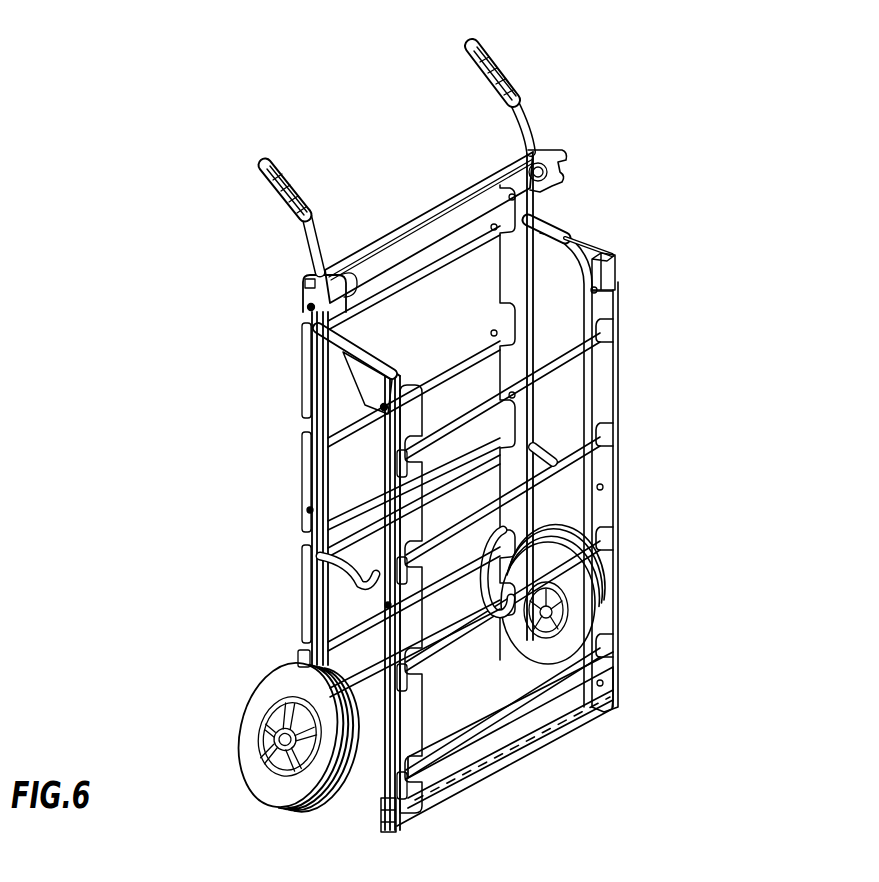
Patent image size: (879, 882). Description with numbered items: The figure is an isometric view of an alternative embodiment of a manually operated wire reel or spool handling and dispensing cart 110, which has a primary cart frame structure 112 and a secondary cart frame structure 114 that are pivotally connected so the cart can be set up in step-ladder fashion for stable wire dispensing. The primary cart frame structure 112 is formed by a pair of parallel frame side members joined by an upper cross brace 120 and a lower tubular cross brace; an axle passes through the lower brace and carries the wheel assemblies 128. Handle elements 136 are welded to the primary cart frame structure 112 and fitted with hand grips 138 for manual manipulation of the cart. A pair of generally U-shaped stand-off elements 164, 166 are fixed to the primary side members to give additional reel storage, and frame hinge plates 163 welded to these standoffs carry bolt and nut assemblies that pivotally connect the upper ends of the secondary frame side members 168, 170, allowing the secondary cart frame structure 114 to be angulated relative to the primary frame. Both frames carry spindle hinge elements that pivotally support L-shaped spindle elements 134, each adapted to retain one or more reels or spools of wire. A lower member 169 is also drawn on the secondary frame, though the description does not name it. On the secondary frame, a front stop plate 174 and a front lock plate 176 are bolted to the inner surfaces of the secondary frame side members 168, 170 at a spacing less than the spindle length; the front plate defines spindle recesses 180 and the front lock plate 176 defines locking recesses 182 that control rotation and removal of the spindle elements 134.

The wire reel or spool handling and dispensing cart 110 is at (689, 99).
The primary cart frame structure 112 is at (291, 368).
The secondary cart frame structure 114 is at (374, 808).
The upper cross brace 120 is at (407, 215).
The wheel assembly 128 is at (247, 716).
The spindle element 134 is at (548, 690).
The handle element 136 is at (305, 248).
The hand grip 138 is at (273, 190).
The frame hinge plate 163 is at (378, 380).
The stand-off element 164 is at (313, 347).
The stand-off element 166 is at (570, 235).
The secondary frame side member 168 is at (400, 373).
The bottom rail 169 is at (513, 748).
The secondary frame side member 170 is at (617, 271).
The front stop plate 174 is at (412, 496).
The front lock plate 176 is at (604, 466).
The spindle recess 180 is at (420, 651).
The locking recess 182 is at (618, 538).